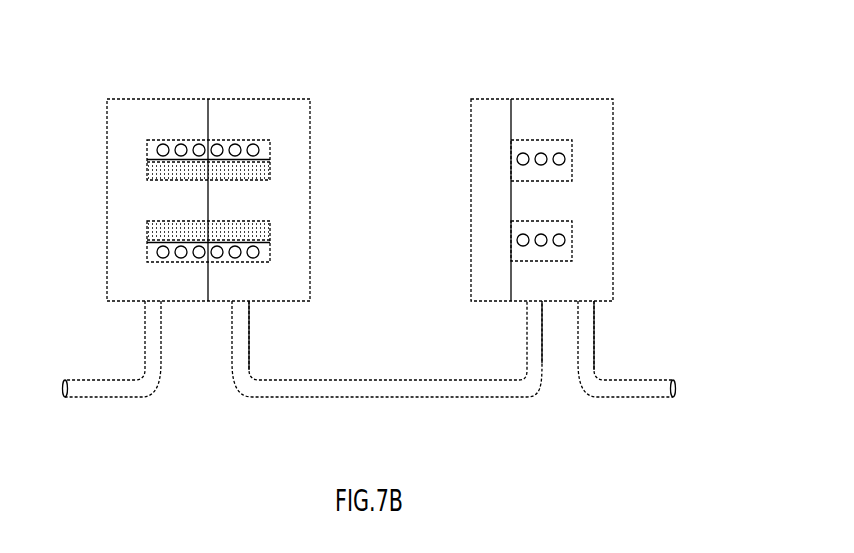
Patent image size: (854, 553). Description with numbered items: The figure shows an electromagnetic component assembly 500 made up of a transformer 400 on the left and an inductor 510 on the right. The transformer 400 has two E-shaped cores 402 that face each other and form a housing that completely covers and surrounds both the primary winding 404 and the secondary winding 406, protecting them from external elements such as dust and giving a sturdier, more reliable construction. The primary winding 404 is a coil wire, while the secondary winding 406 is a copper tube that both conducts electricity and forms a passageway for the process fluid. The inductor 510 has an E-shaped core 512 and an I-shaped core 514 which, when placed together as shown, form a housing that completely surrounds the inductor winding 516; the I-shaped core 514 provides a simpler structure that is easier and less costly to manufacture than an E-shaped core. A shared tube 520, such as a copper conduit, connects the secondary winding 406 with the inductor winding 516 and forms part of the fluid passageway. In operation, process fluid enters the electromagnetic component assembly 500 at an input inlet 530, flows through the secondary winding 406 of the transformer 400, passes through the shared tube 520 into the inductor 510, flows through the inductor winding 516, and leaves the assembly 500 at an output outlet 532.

The transformer 400 is at (102, 76).
The E-shaped core 402 is at (107, 200).
The primary winding 404 is at (270, 170).
The secondary winding 406 is at (147, 152).
The electromagnetic component assembly 500 is at (712, 37).
The inductor 510 is at (528, 80).
The E-shaped core 512 is at (613, 127).
The I-shaped core 514 is at (471, 127).
The inductor winding 516 is at (572, 240).
The shared tube 520 is at (452, 407).
The input inlet 530 is at (52, 406).
The output outlet 532 is at (733, 389).